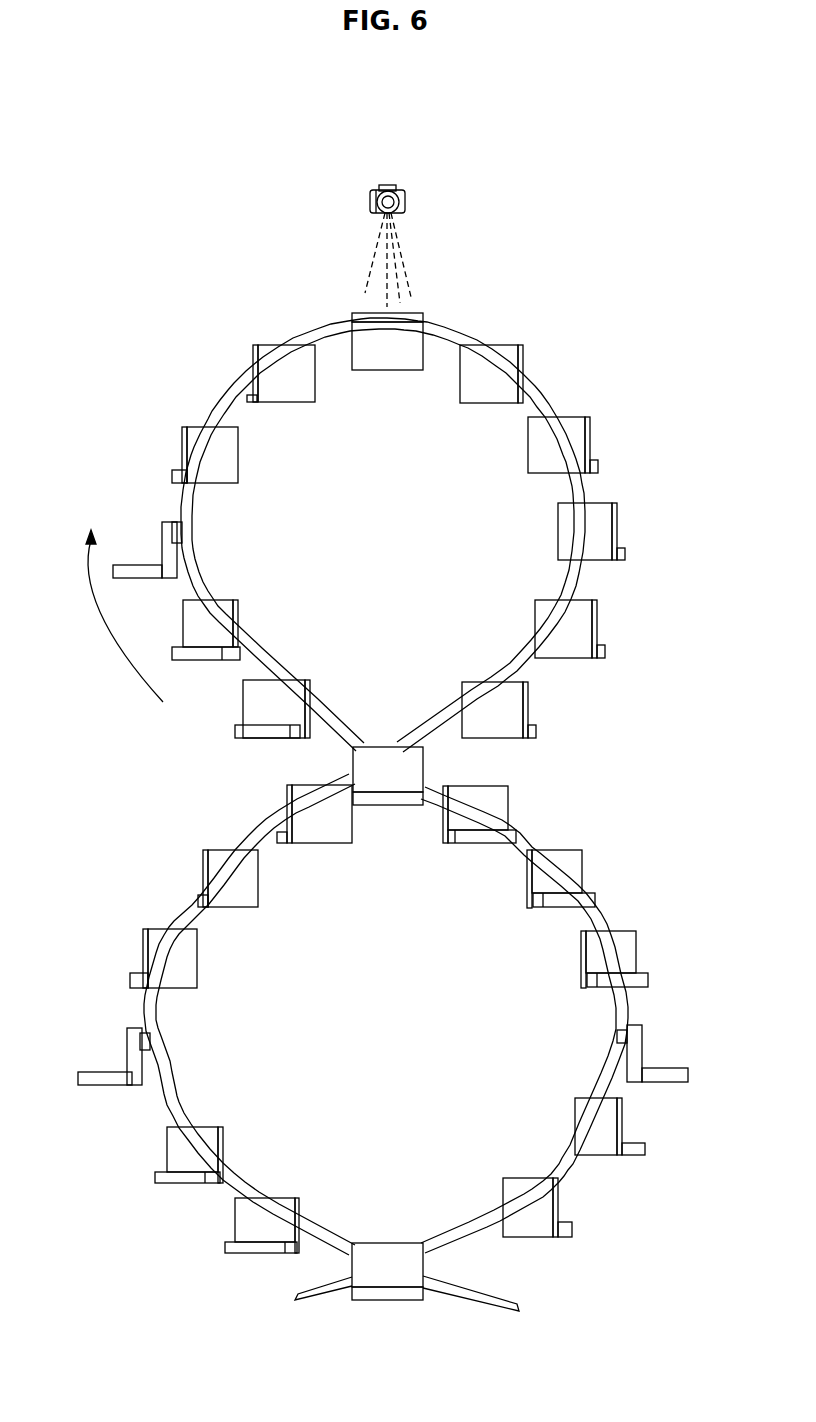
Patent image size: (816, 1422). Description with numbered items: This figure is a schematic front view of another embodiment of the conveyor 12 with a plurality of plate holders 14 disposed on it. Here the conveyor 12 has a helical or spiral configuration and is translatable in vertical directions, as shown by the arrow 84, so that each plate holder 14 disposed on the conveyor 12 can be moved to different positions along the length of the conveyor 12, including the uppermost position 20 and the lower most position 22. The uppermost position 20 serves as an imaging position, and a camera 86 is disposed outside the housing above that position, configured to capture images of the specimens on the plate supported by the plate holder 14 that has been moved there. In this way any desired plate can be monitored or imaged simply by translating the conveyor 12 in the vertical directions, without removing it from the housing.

The conveyor 12 is at (545, 397).
The plate holder 14 is at (210, 660).
The uppermost position 20 is at (410, 307).
The lower most position 22 is at (415, 1268).
The arrow 84 is at (98, 607).
The camera 86 is at (405, 203).